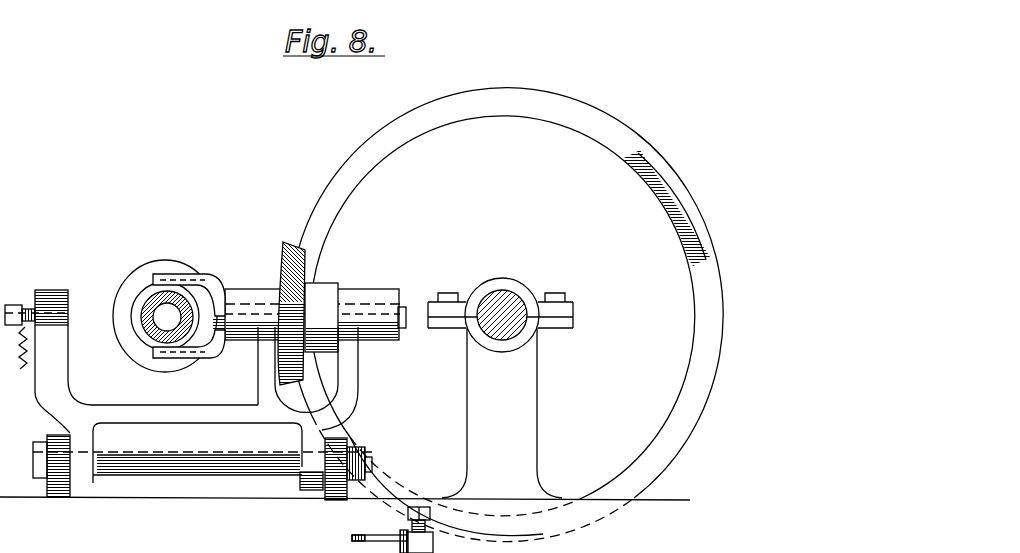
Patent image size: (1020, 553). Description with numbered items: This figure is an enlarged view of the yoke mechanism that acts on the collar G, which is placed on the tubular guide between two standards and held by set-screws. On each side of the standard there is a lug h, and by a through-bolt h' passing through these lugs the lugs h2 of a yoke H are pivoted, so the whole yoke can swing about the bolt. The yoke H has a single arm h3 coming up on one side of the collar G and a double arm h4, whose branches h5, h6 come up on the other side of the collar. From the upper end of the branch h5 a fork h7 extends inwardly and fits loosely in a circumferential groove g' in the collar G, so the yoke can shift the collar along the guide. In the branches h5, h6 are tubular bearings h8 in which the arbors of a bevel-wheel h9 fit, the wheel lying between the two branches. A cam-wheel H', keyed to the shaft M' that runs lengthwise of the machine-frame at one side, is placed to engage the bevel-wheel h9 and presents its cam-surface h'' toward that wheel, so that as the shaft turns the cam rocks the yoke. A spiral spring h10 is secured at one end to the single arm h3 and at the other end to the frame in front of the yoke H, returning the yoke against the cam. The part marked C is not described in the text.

The cam-wheel H' is at (506, 315).
The cam-surface h'' is at (505, 316).
The shaft M' is at (500, 377).
The tubular bearings h8 is at (315, 302).
The bevel-wheel h9 is at (318, 272).
The yoke H is at (146, 379).
The single arm h3 is at (58, 384).
The spiral spring h10 is at (21, 364).
The collar G is at (165, 328).
The fork h7 is at (222, 303).
The circumferential groove g' is at (139, 311).
The branch h5 is at (250, 366).
The double arm h4 is at (297, 376).
The branch h6 is at (354, 378).
The lugs h2 is at (88, 428).
The through-bolt h' is at (202, 474).
The lug h is at (202, 483).
The bottom bracket C is at (418, 530).